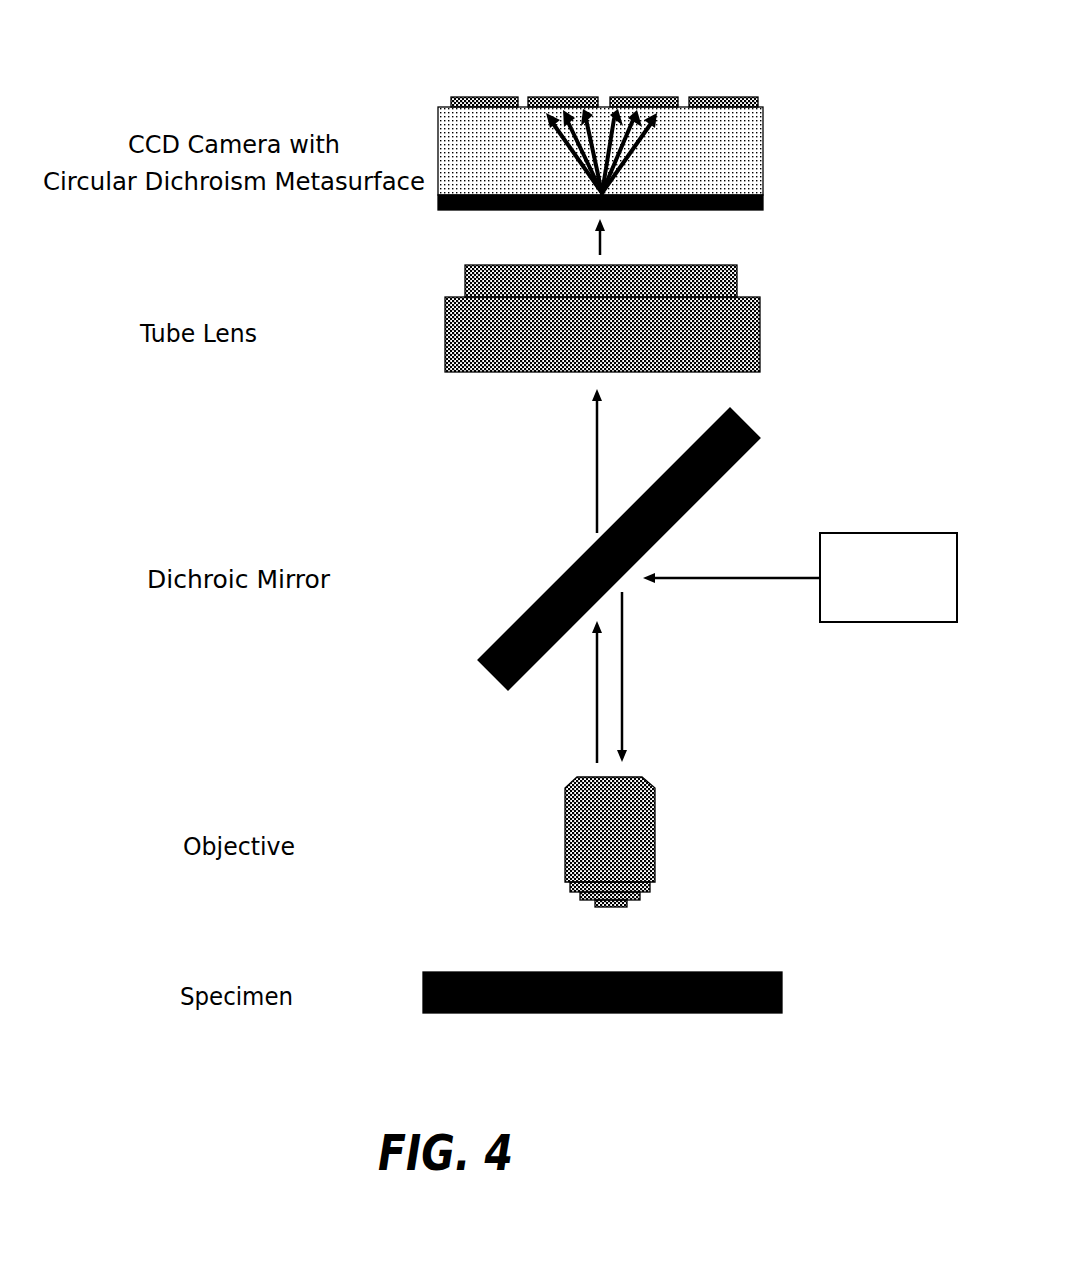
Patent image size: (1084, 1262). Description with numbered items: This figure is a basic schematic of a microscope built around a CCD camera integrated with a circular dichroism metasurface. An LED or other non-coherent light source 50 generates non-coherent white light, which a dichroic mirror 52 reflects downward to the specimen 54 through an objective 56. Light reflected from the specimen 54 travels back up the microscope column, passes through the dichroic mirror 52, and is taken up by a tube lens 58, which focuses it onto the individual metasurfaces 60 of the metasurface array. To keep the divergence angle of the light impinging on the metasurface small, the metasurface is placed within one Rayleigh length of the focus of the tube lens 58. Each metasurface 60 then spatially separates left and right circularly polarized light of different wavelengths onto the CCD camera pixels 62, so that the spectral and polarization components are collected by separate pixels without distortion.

The non-coherent light source 50 is at (860, 533).
The dichroic mirror 52 is at (531, 610).
The specimen 54 is at (755, 972).
The objective 56 is at (580, 787).
The tube lens 58 is at (477, 315).
The individual metasurface 60 is at (578, 212).
The CCD camera pixels 62 is at (648, 97).